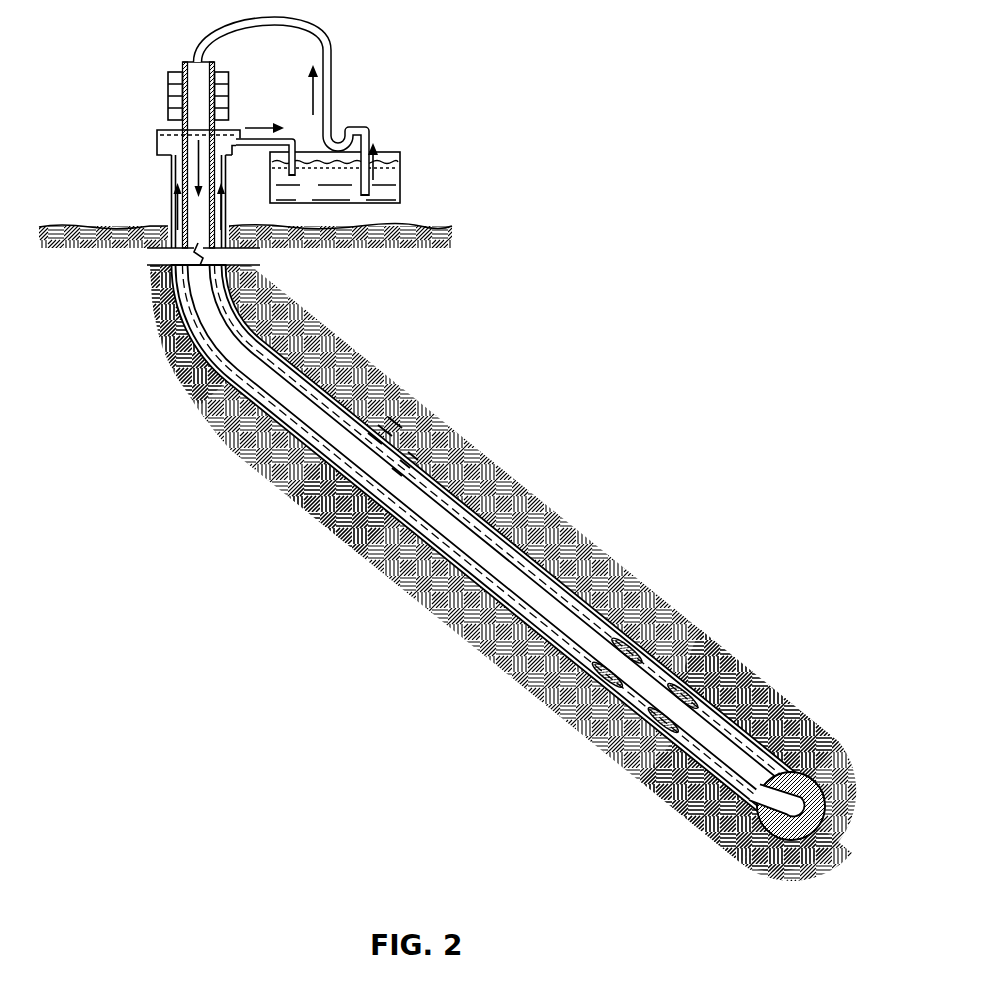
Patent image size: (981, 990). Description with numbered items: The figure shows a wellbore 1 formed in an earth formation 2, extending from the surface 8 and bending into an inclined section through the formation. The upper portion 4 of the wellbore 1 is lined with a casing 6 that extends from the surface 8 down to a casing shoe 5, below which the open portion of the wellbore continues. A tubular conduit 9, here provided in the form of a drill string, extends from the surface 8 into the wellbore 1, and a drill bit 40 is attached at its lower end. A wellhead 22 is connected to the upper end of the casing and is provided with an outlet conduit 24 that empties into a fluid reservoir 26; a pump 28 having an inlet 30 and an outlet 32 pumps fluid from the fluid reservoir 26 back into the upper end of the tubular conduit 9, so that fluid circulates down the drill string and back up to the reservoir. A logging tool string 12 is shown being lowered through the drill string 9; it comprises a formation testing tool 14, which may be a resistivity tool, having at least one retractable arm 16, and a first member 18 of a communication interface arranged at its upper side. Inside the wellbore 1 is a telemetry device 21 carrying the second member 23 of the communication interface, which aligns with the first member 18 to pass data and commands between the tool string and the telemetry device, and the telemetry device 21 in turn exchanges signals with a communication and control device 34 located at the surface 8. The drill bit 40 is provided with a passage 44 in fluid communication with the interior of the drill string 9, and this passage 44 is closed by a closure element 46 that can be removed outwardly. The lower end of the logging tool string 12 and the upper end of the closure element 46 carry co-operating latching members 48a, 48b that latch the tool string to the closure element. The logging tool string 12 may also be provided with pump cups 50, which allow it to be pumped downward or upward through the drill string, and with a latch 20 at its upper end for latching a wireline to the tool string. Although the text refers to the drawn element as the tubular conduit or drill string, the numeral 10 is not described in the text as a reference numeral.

The wellbore 1 is at (383, 505).
The earth formation 2 is at (277, 496).
The upper portion 4 is at (160, 348).
The casing shoe 5 is at (218, 368).
The casing 6 is at (160, 300).
The surface 8 is at (80, 226).
The tubular conduit 9 is at (300, 323).
The tubing string 10 is at (330, 418).
The logging tool string 12 is at (484, 534).
The formation testing tool 14 is at (578, 630).
The retractable arm 16 is at (553, 592).
The first member of communication interface 18 is at (328, 490).
The latch 20 is at (380, 450).
The telemetry device 21 is at (603, 677).
The wellhead 22 is at (140, 179).
The second member of communication interface 23 is at (670, 728).
The outlet conduit 24 is at (292, 140).
The fluid reservoir 26 is at (402, 180).
The pump 28 is at (340, 125).
The inlet 30 is at (371, 132).
The outlet 32 is at (328, 46).
The communication and control device 34 is at (168, 90).
The drill bit 40 is at (816, 774).
The passage 44 is at (843, 768).
The closure element 46 is at (838, 866).
The latching member 48a is at (606, 582).
The latching member 48b is at (752, 858).
The pump cups 50 is at (398, 478).